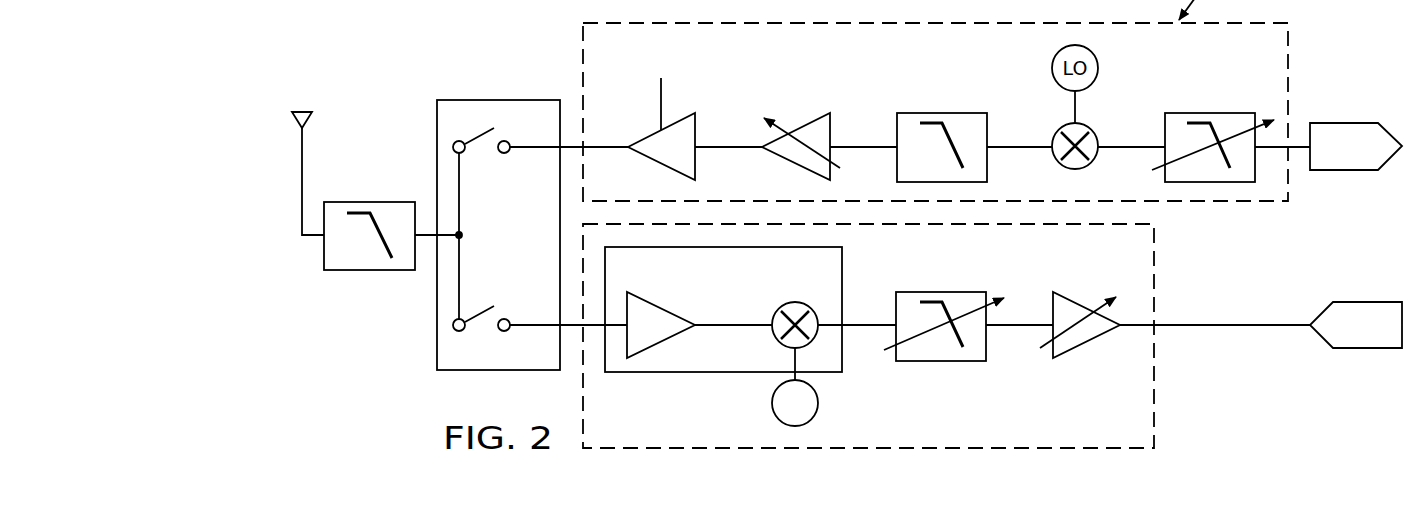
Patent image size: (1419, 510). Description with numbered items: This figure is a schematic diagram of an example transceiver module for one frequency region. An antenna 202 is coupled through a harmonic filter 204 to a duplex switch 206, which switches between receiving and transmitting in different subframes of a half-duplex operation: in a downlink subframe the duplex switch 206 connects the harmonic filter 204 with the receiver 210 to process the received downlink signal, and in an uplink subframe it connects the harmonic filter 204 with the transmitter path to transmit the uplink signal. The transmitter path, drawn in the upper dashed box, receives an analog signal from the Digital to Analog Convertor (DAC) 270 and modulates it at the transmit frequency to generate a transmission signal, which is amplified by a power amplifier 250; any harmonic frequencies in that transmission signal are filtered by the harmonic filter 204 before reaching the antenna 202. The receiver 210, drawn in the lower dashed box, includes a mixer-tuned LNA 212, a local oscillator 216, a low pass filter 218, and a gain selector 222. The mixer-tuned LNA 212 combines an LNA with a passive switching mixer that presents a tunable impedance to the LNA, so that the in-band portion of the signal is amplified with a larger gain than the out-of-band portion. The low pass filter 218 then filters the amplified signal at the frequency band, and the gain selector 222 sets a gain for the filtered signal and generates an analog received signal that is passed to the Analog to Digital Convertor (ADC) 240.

The antenna 202 is at (300, 110).
The harmonic filter 204 is at (370, 202).
The duplex switch 206 is at (498, 100).
The power amplifier 250 is at (652, 133).
The Digital to Analog Convertor (DAC) 270 is at (1343, 123).
The receiver 210 is at (1162, 416).
The mixer-tuned LNA 212 is at (850, 268).
The local oscillator 216 is at (818, 405).
The low pass filter 218 is at (942, 362).
The gain selector 222 is at (1089, 344).
The Analog to Digital Convertor (ADC) 240 is at (1365, 348).